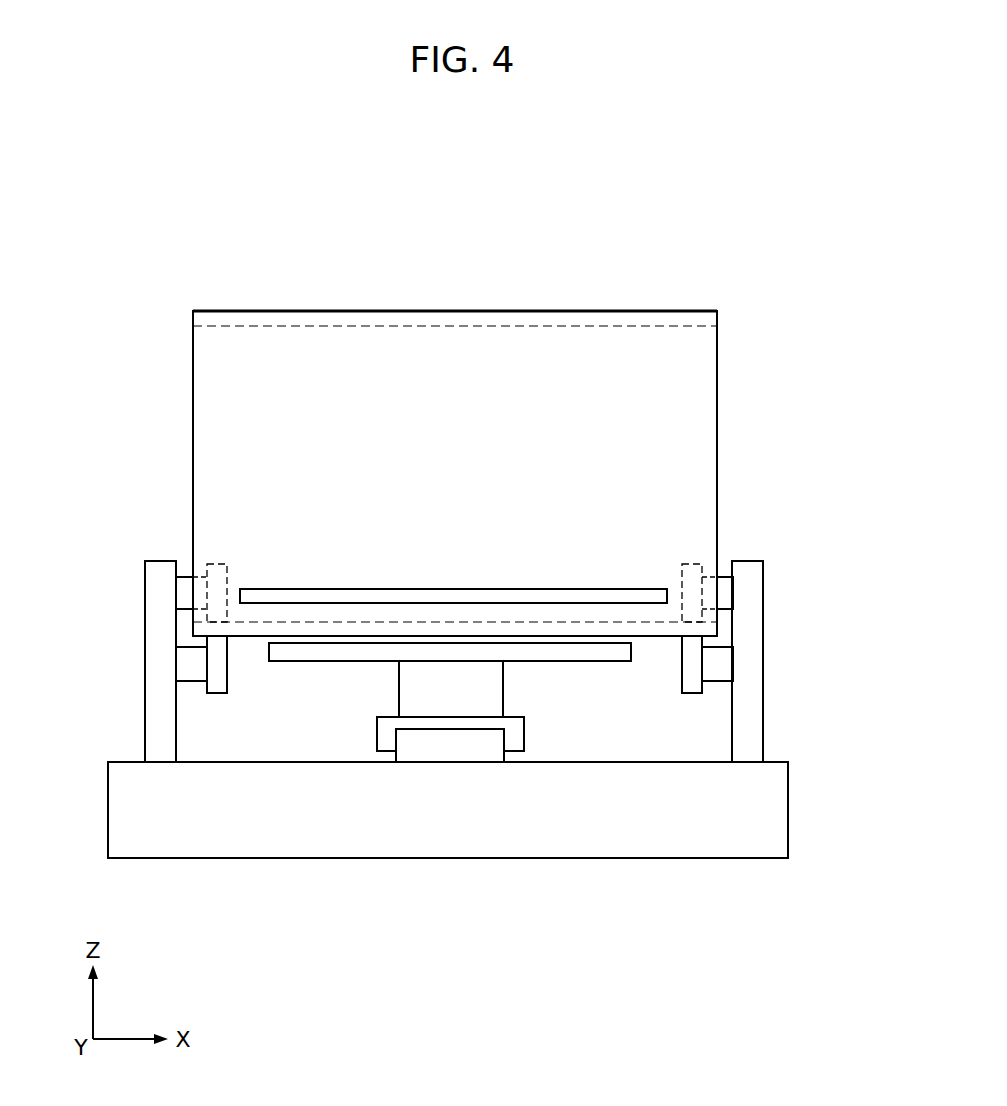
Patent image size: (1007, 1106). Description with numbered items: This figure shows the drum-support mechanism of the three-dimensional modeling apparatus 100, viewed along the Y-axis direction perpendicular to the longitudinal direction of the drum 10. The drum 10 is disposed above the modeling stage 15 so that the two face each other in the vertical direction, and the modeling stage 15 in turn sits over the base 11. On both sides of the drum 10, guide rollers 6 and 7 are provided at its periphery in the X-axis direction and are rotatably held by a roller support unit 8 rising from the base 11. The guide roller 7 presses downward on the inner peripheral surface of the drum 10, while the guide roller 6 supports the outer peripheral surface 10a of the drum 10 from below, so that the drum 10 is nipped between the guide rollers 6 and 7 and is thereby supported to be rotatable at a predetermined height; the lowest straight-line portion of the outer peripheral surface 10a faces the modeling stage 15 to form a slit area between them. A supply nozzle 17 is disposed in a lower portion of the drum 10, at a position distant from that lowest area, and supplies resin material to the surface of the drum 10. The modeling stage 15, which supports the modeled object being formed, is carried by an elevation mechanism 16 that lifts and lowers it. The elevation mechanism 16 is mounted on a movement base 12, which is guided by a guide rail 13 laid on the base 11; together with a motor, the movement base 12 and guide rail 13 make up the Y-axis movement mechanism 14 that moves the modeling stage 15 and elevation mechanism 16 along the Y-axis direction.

The 3D modeling apparatus 100 is at (441, 218).
The drum 10 is at (268, 338).
The outer peripheral surface 10a is at (215, 310).
The supply nozzle 17 is at (633, 594).
The guide roller 7 is at (215, 591).
The guide roller 6 is at (218, 664).
The roller support unit 8 is at (750, 722).
The modeling stage 15 is at (285, 655).
The elevation mechanism 16 is at (411, 687).
The movement base 12 is at (516, 728).
The guide rail 13 is at (487, 741).
The Y-axis movement mechanism 14 is at (596, 683).
The base 11 is at (305, 840).